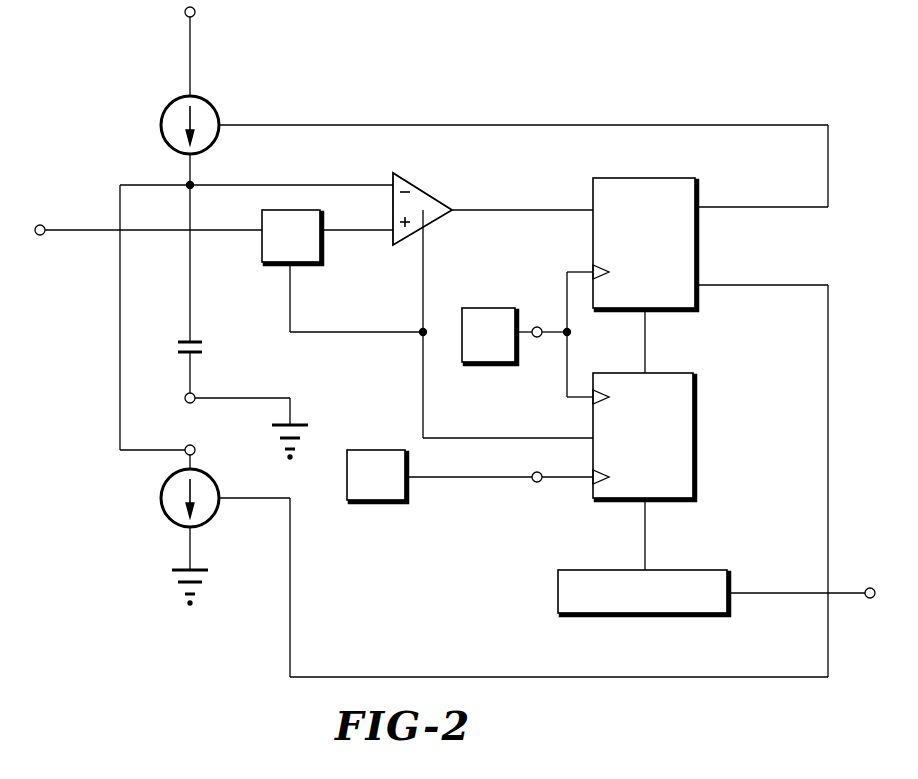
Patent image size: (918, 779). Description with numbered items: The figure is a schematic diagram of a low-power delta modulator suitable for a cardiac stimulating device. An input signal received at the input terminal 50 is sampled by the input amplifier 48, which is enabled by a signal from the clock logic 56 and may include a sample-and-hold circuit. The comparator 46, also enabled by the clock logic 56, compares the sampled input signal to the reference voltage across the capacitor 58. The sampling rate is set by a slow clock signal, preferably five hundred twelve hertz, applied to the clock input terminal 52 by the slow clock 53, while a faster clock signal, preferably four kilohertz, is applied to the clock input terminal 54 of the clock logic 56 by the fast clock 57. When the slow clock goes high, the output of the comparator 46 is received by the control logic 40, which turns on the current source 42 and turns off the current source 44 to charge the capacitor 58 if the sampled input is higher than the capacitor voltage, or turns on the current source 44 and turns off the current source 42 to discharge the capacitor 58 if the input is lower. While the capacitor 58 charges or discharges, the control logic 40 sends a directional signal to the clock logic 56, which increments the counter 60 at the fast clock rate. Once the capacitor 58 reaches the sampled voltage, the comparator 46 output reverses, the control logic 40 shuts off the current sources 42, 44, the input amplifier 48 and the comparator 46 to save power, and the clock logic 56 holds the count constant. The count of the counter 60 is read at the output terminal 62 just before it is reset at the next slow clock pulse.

The control logic 40 is at (693, 196).
The current source 42 is at (217, 112).
The current source 44 is at (217, 514).
The comparator 46 is at (432, 190).
The input amplifier 48 is at (324, 258).
The input terminal 50 is at (39, 225).
The clock input terminal 52 is at (538, 338).
The slow clock 53 is at (496, 308).
The clock input terminal 54 is at (538, 483).
The clock logic 56 is at (670, 373).
The fast clock 57 is at (382, 415).
The capacitor 58 is at (229, 350).
The counter 60 is at (695, 570).
The output terminal 62 is at (872, 588).